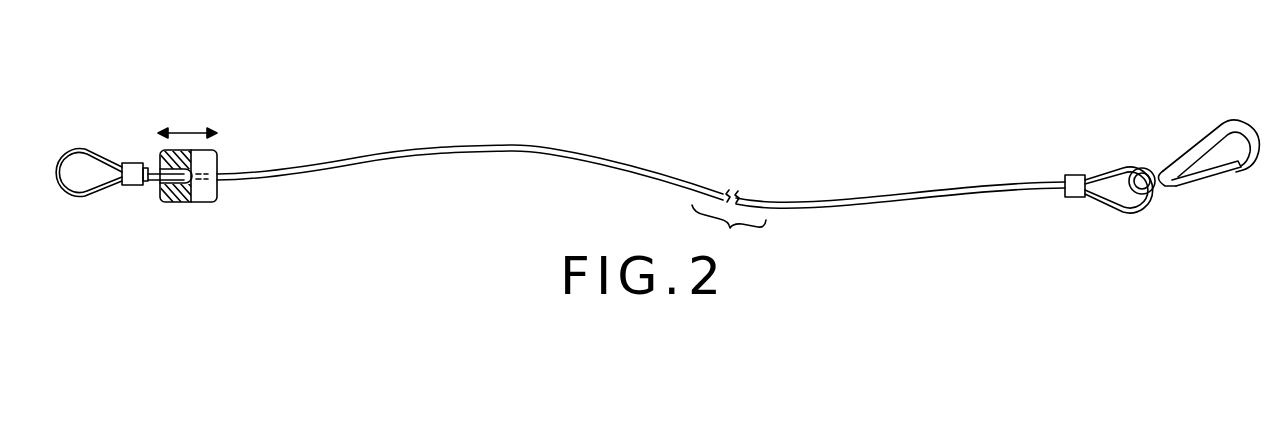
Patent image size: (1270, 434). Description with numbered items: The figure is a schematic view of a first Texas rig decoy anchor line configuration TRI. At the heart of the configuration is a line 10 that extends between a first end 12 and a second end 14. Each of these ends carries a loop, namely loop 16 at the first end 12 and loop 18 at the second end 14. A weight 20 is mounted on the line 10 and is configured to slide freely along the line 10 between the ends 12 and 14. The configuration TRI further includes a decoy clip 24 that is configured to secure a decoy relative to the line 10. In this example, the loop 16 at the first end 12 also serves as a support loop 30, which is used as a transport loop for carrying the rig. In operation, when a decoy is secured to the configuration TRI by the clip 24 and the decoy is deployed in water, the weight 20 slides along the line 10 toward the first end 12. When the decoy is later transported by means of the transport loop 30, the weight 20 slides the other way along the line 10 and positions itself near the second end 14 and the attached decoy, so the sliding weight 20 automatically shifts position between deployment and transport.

The line 10 is at (528, 147).
The first end 12 is at (72, 198).
The second end 14 is at (1143, 207).
The loop 16 is at (72, 150).
The loop 18 is at (1120, 168).
The weight 20 is at (198, 198).
The decoy clip 24 is at (1213, 130).
The support loop 30 is at (85, 178).
The first Texas rig configuration TRI is at (722, 130).